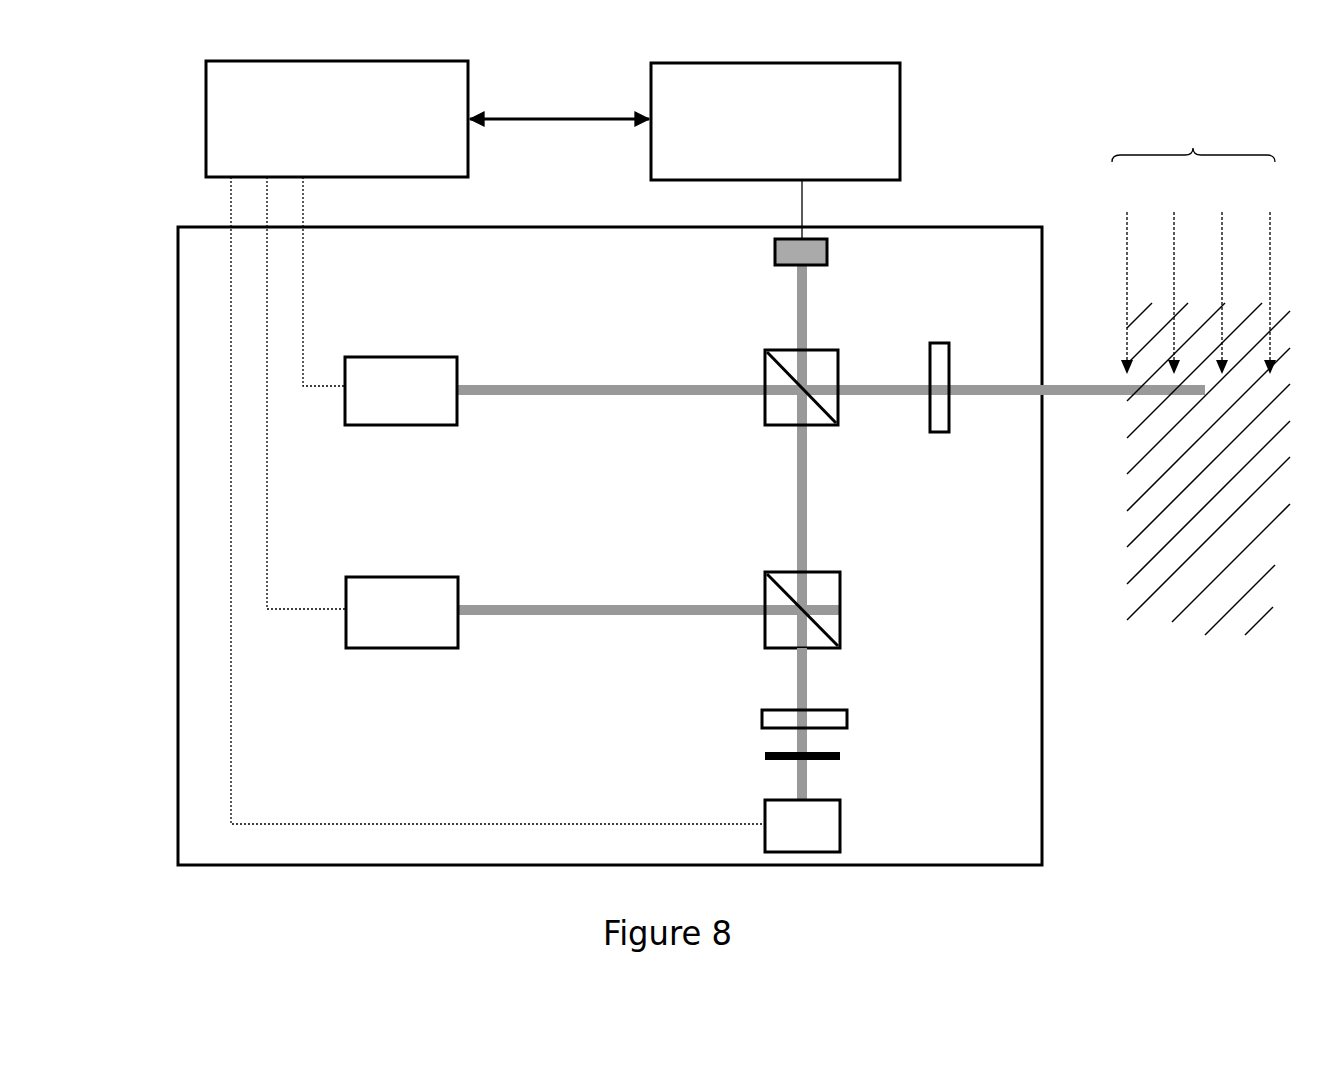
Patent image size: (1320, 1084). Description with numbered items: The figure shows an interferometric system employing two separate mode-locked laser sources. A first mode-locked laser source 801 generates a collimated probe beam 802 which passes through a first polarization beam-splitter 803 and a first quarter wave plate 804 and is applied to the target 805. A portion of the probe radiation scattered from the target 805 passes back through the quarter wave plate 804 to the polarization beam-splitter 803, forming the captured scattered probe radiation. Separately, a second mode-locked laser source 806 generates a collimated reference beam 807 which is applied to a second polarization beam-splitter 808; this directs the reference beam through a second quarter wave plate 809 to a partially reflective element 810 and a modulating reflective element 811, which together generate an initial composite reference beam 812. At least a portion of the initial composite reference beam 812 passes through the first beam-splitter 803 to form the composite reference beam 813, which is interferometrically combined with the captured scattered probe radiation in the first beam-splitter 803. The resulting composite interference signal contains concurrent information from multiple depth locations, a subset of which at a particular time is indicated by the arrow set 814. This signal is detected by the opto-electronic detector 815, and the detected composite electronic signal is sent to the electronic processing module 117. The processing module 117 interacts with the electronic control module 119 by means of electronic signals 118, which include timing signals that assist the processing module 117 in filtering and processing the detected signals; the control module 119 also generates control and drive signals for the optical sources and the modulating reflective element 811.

The electronic processing module 117 is at (908, 92).
The electronic signals 118 is at (580, 133).
The electronic control module 119 is at (197, 110).
The first mode-locked laser source 801 is at (412, 432).
The collimated probe beam 802 is at (612, 405).
The first polarization beam-splitter 803 is at (765, 435).
The first quarter wave plate 804 is at (957, 422).
The target 805 is at (1208, 642).
The second mode-locked laser source 806 is at (415, 655).
The collimated reference beam 807 is at (570, 622).
The second polarization beam-splitter 808 is at (763, 568).
The second quarter wave plate 809 is at (853, 722).
The partially reflective element 810 is at (763, 745).
The modulating reflective element 811 is at (850, 810).
The initial composite reference beam 812 is at (815, 680).
The composite reference beam 813 is at (812, 485).
The arrow set 814 is at (1188, 128).
The opto-electronic detector 815 is at (775, 252).